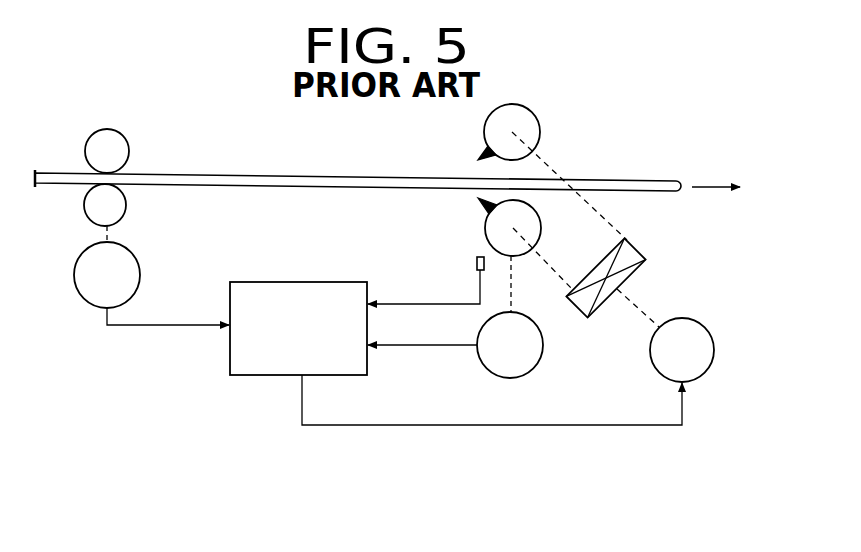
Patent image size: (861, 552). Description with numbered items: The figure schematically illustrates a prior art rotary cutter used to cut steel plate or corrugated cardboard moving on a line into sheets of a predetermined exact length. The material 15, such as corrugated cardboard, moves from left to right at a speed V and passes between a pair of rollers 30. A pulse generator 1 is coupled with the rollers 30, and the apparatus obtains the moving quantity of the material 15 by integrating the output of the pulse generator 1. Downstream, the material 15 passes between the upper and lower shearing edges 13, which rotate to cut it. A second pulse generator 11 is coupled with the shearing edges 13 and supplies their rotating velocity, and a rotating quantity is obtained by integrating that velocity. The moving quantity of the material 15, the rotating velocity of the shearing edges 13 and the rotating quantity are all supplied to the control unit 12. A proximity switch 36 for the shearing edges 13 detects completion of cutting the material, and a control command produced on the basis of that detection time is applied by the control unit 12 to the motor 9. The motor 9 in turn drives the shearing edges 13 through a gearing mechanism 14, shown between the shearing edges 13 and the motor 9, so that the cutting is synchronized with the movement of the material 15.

The pulse generator 1 is at (134, 256).
The motor 9 is at (712, 343).
The pulse generator 11 is at (544, 347).
The control unit 12 is at (327, 282).
The shearing edges 13 is at (536, 121).
The gearing mechanism 14 is at (636, 247).
The material 15 is at (604, 179).
The rollers 30 is at (128, 152).
The proximity switch 36 is at (477, 263).